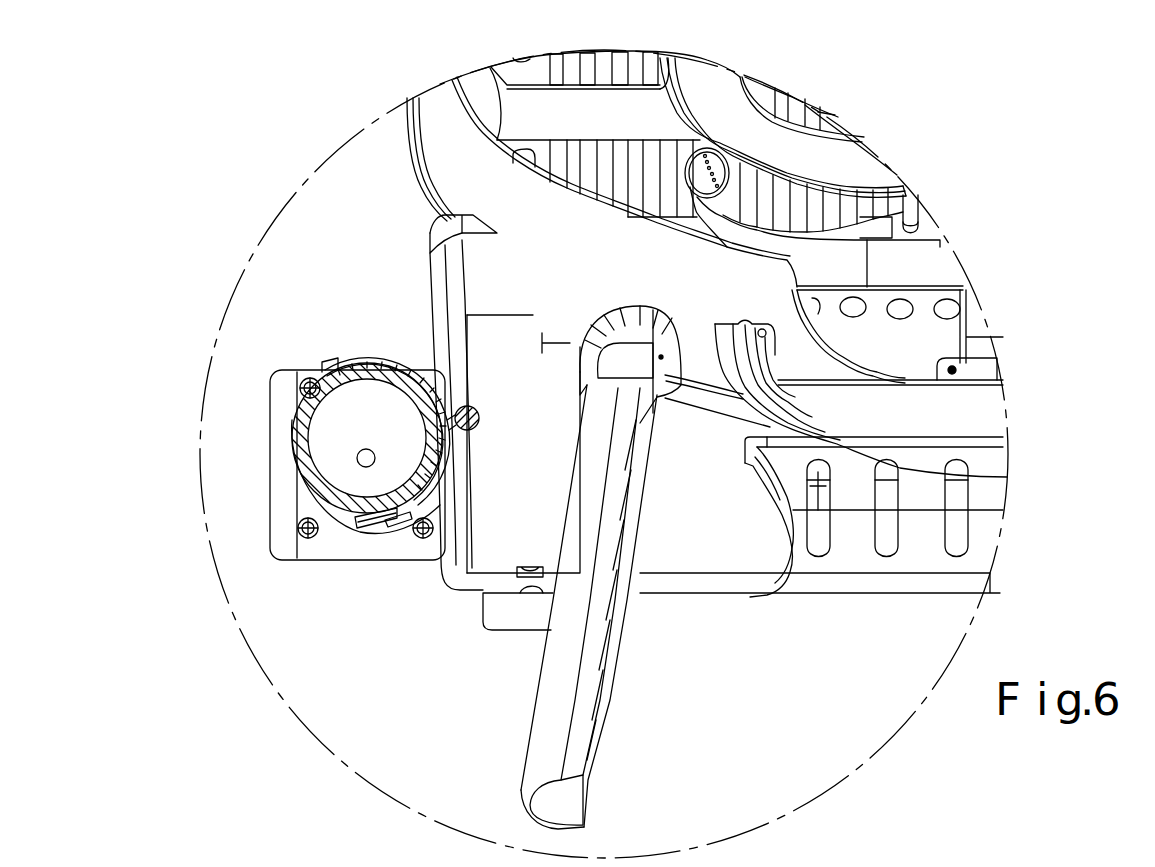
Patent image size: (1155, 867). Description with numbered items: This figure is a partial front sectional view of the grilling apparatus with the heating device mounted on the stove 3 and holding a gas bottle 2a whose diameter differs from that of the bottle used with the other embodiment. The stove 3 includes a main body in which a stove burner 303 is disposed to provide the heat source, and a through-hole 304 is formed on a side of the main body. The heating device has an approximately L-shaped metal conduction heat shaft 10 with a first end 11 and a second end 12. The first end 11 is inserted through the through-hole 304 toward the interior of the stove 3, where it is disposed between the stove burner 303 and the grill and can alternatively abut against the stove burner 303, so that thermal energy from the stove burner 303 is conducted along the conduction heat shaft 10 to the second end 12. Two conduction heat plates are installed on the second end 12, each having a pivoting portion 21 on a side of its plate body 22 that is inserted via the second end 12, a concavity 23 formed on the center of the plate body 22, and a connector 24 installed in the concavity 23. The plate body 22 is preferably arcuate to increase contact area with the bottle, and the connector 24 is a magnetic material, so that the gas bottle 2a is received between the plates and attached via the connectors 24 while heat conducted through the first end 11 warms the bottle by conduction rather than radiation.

The stove 3 is at (1032, 392).
The stove burner 303 is at (723, 163).
The through-hole 304 is at (443, 228).
The conduction heat shaft 10 is at (432, 300).
The first end 11 is at (873, 227).
The second end 12 is at (443, 343).
The gas bottle 2a is at (296, 433).
The pivoting portion 21 is at (470, 580).
The plate body 22 is at (368, 524).
The concavity 23 is at (392, 530).
The connector 24 is at (408, 545).